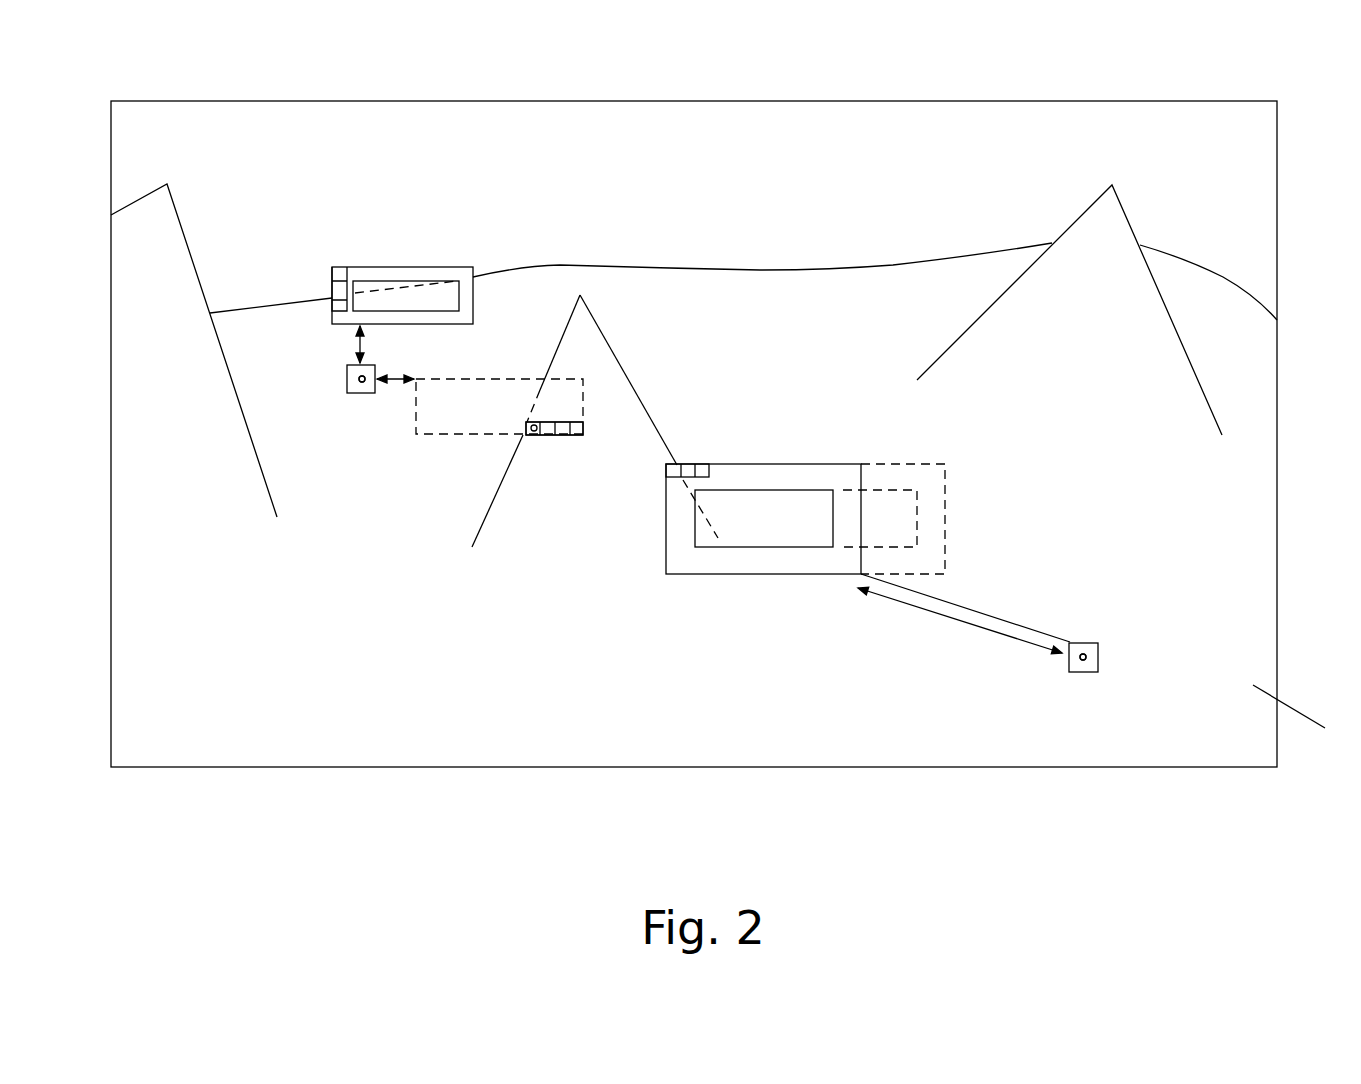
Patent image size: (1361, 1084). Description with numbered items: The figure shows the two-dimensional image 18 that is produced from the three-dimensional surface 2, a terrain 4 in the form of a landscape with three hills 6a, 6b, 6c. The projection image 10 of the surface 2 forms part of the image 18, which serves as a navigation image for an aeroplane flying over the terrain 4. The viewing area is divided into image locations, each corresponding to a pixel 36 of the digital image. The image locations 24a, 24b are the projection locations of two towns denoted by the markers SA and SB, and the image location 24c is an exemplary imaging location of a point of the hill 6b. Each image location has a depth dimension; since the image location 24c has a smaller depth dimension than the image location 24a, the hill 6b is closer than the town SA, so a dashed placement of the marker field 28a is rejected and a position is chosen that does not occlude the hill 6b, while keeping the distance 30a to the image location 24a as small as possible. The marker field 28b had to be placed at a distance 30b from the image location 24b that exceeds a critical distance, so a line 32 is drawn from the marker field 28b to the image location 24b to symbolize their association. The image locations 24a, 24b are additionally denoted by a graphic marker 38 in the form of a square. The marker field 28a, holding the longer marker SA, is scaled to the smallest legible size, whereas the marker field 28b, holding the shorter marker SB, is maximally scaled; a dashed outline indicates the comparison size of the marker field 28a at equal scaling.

The 3D surface 2 is at (1223, 277).
The terrain 4 is at (803, 337).
The hill 6a is at (167, 279).
The hill 6b is at (597, 366).
The hill 6c is at (1100, 314).
The projection image 10 is at (1306, 719).
The 2D image 18 is at (1063, 101).
The image location 24a is at (358, 383).
The image location 24b is at (1084, 656).
The image location 24c is at (528, 432).
The marker field 28a is at (520, 380).
The marker field 28b is at (753, 574).
The distance 30a is at (363, 346).
The distance 30b is at (927, 610).
The line 32 is at (975, 612).
The pixel 36 is at (345, 297).
The graphic marker 38 is at (347, 381).
The marker SA is at (377, 283).
The marker SB is at (705, 546).